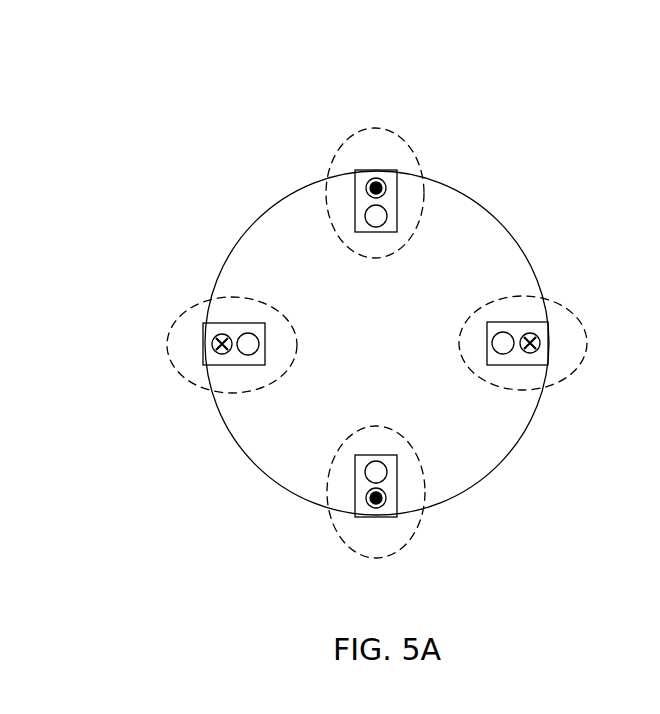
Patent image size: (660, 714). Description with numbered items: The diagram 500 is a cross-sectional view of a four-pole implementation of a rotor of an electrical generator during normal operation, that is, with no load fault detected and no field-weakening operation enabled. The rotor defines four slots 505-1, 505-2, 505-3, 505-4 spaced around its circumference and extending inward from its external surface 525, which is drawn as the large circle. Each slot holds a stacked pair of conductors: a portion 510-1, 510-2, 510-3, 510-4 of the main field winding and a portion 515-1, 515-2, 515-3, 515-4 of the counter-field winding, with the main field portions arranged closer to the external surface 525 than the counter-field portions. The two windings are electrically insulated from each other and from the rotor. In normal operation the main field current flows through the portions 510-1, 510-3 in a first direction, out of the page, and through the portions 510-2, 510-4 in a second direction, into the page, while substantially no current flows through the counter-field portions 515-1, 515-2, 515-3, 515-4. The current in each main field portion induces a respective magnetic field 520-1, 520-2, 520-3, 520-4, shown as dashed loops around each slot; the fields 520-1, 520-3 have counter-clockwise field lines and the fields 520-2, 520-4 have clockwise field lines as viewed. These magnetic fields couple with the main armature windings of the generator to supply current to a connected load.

The diagram 500 is at (245, 112).
The external surface 525 is at (482, 200).
The slot 505-1 is at (397, 198).
The portion of the main field winding 510-1 is at (366, 188).
The portion of the counter-field winding 515-1 is at (365, 216).
The magnetic field 520-1 is at (380, 128).
The slot 505-2 is at (512, 365).
The portion of the main field winding 510-2 is at (533, 333).
The portion of the counter-field winding 515-2 is at (504, 332).
The magnetic field 520-2 is at (473, 375).
The slot 505-3 is at (397, 488).
The portion of the main field winding 510-3 is at (376, 509).
The portion of the counter-field winding 515-3 is at (397, 463).
The magnetic field 520-3 is at (330, 466).
The slot 505-4 is at (245, 365).
The portion of the main field winding 510-4 is at (213, 338).
The portion of the counter-field winding 515-4 is at (248, 333).
The magnetic field 520-4 is at (235, 295).